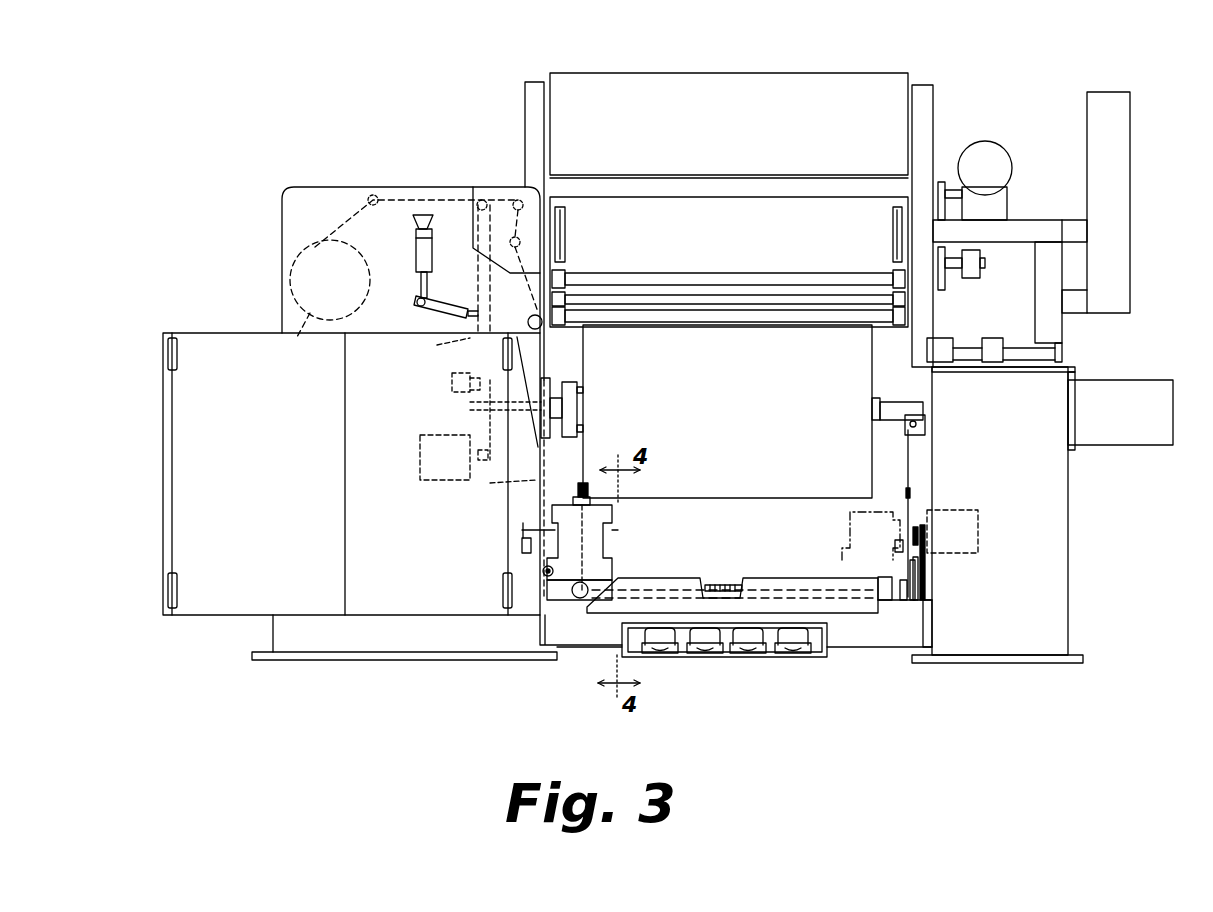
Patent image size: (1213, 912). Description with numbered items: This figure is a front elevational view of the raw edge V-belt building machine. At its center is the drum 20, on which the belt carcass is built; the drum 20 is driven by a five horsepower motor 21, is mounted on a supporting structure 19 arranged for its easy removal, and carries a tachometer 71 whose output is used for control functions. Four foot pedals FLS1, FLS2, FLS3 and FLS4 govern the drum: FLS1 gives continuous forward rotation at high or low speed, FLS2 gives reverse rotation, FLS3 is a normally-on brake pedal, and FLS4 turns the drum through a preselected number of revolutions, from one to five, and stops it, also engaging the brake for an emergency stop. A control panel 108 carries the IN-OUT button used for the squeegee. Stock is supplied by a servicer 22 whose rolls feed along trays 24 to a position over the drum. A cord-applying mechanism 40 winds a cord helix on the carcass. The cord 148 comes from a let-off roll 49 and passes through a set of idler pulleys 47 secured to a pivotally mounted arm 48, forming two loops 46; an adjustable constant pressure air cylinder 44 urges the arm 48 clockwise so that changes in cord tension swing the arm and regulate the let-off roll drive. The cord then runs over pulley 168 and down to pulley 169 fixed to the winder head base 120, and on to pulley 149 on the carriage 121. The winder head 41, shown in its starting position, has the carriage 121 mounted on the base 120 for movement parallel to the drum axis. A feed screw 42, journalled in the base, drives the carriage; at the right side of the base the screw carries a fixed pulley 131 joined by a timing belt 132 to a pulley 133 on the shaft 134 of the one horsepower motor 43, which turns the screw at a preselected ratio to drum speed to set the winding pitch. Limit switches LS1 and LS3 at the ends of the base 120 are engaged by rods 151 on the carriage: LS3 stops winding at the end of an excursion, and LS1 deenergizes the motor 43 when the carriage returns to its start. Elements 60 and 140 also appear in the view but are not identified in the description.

The vertical frame post 60 is at (535, 85).
The servicer 22 is at (937, 83).
The trays 24 is at (745, 228).
The drum 20 is at (727, 411).
The control panel 108 is at (527, 365).
The supporting structure 19 is at (913, 407).
The cord-applying mechanism 40 is at (500, 159).
The let-off roll 49 is at (303, 325).
The constant pressure air cylinder 44 is at (416, 256).
The loops 46 is at (477, 268).
The arm 48 is at (442, 314).
The pulley 168 is at (517, 322).
The idler pulleys 47 is at (426, 347).
The tachometer 71 is at (453, 390).
The motor 21 is at (420, 481).
The cord 148 is at (502, 494).
The limit switch LS1 is at (520, 547).
The pulley 169 is at (548, 568).
The pulley 149 is at (578, 598).
The actuator rod 140 is at (585, 483).
The carriage 121 is at (603, 568).
The rods 151 is at (614, 531).
The head 41 is at (630, 512).
The limit switch LS3 is at (877, 556).
The screw 42 is at (722, 585).
The pulley 133 is at (916, 527).
The shaft 134 is at (926, 535).
The motor 43 is at (979, 520).
The timing belt 132 is at (925, 560).
The fixed pulley 131 is at (926, 580).
The base 120 is at (910, 630).
The foot pedal FLS1 is at (662, 652).
The foot pedal FLS2 is at (705, 652).
The foot pedal FLS3 is at (748, 652).
The foot pedal FLS4 is at (793, 652).